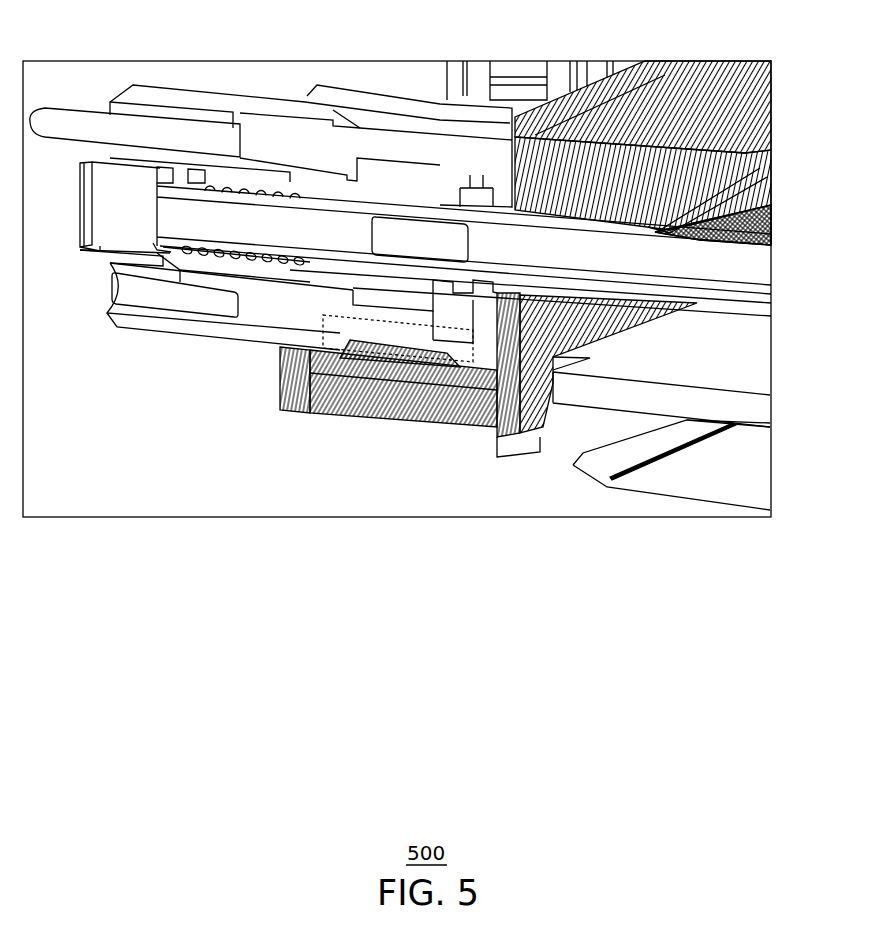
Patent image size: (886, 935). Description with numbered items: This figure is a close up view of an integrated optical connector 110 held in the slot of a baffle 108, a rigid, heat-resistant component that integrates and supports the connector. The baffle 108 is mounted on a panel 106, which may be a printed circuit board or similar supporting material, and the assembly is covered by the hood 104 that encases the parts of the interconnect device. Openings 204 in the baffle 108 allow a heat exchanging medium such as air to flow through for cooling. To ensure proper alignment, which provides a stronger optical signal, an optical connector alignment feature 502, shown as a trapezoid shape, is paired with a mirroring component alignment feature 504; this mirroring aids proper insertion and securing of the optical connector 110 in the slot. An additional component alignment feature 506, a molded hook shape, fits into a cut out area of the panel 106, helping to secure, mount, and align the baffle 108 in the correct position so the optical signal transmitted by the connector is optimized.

The hood 104 is at (640, 494).
The panel 106 is at (612, 413).
The baffle 108 is at (724, 100).
The optical connector 110 is at (110, 287).
The openings 204 is at (720, 197).
The optical connector alignment feature 502 is at (392, 318).
The mirroring component alignment feature 504 is at (397, 372).
The additional component alignment feature 506 is at (518, 467).